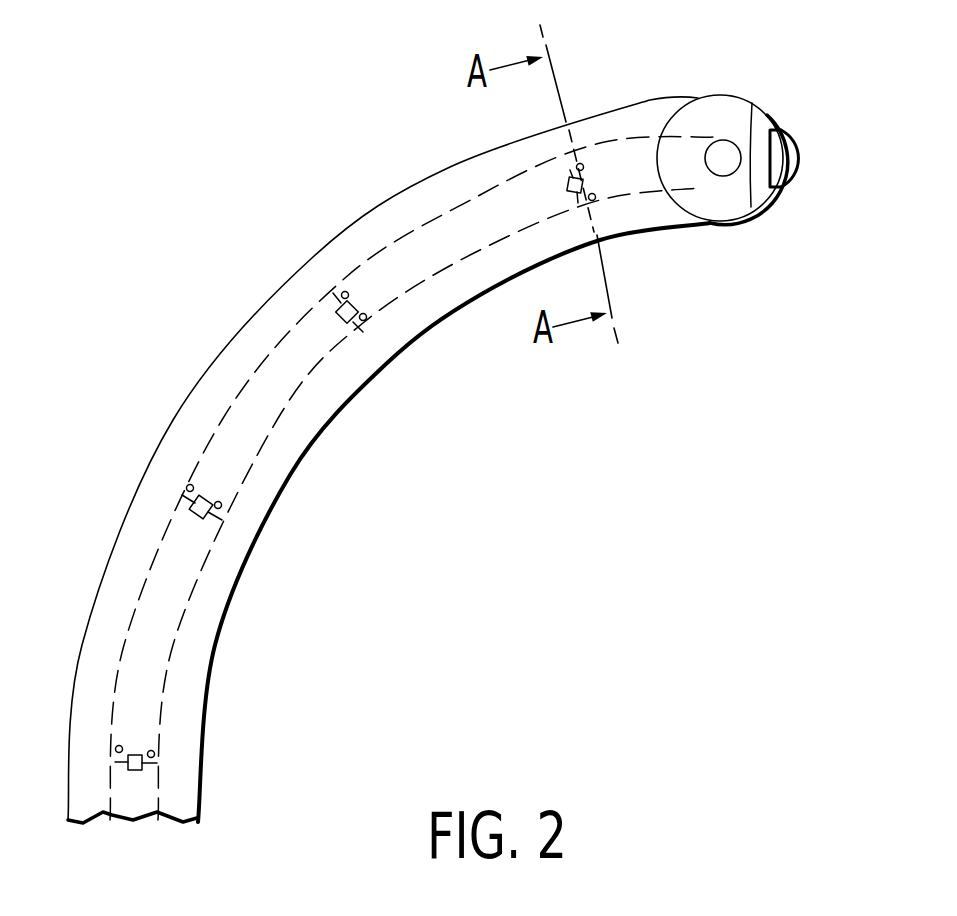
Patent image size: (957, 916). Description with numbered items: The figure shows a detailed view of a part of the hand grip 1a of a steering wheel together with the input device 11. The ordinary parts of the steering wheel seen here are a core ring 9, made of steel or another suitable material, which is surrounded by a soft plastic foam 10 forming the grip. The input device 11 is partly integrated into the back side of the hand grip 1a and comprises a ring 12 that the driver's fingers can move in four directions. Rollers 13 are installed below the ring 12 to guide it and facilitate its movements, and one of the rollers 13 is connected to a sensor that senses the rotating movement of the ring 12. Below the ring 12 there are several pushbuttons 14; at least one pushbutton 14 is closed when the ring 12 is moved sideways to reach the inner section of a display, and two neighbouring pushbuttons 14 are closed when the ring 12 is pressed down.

The hand grip 1a is at (198, 172).
The core ring 9 is at (727, 145).
The soft plastic foam 10 is at (700, 110).
The input device 11 is at (773, 127).
The ring 12 is at (797, 173).
The rollers 13 is at (197, 513).
The pushbuttons 14 is at (343, 295).